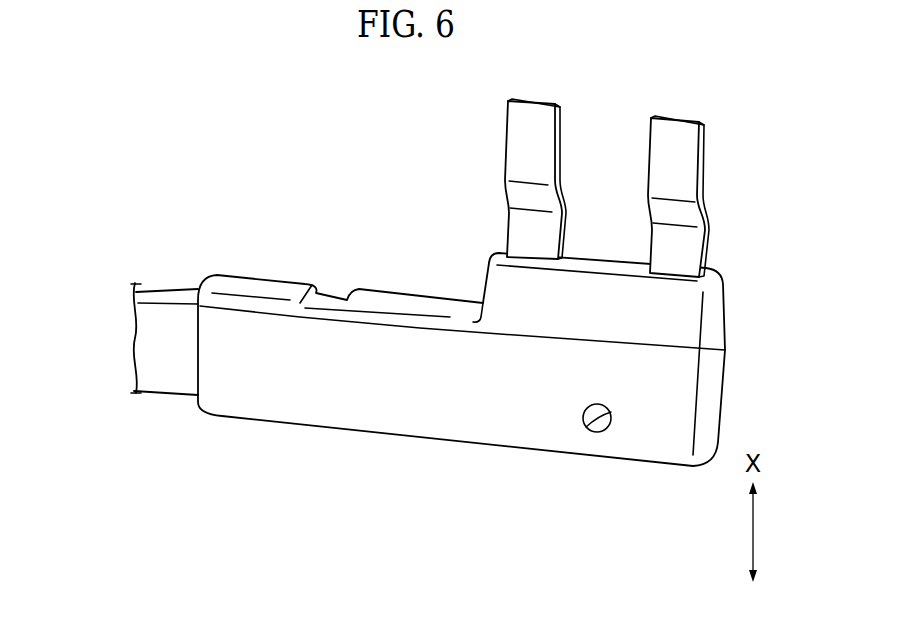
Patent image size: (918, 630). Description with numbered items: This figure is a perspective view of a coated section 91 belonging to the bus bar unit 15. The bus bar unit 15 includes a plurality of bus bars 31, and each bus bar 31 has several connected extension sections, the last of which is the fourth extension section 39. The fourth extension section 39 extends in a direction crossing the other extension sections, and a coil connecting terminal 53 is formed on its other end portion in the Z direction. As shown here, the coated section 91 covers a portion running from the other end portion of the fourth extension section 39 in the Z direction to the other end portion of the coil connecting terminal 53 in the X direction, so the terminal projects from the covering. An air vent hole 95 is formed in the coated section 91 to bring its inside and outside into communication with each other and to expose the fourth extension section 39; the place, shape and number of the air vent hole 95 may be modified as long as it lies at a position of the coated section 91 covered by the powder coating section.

The bus bar unit 15 is at (497, 281).
The bus bar 31 is at (164, 332).
The fourth extension section 39 is at (167, 371).
The coil connecting terminal 53 is at (675, 145).
The coated section 91 is at (436, 449).
The air vent hole 95 is at (588, 432).